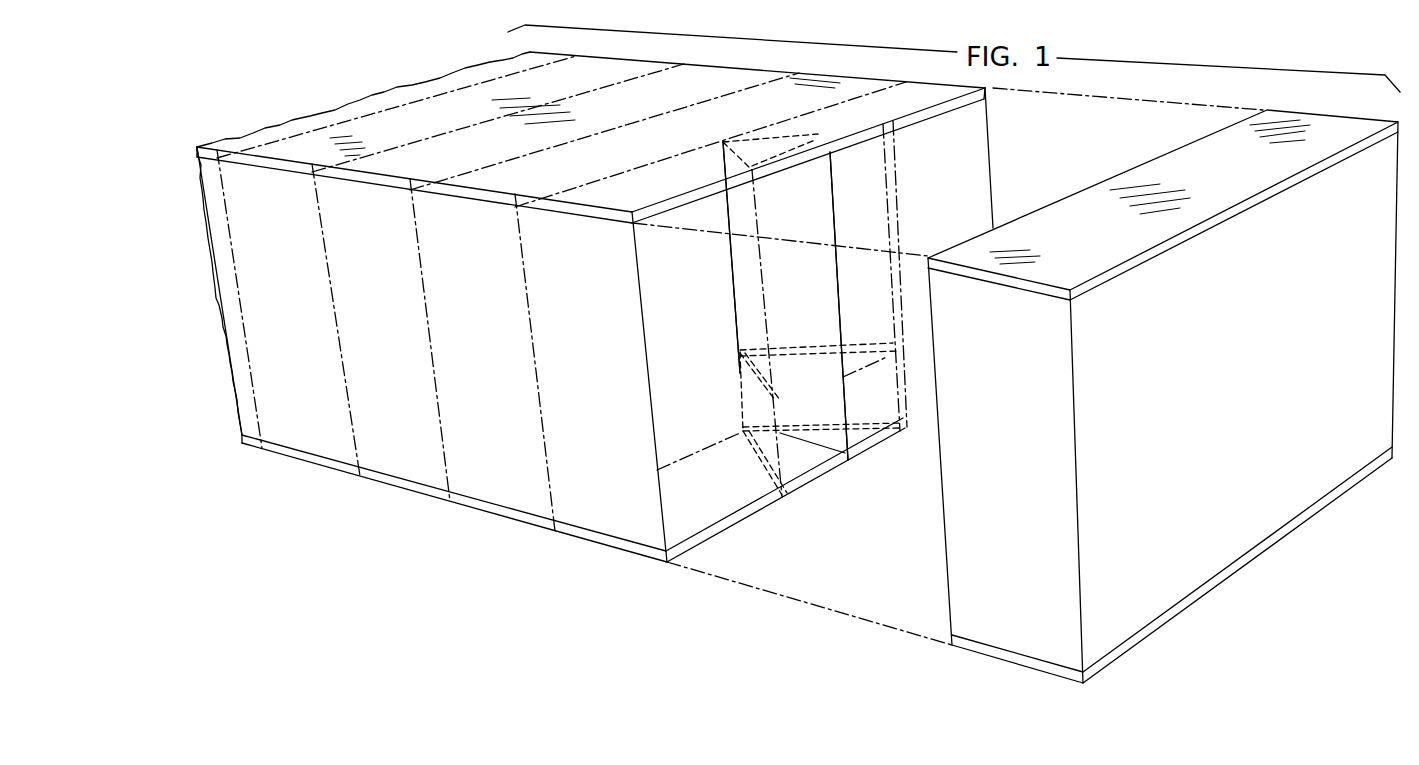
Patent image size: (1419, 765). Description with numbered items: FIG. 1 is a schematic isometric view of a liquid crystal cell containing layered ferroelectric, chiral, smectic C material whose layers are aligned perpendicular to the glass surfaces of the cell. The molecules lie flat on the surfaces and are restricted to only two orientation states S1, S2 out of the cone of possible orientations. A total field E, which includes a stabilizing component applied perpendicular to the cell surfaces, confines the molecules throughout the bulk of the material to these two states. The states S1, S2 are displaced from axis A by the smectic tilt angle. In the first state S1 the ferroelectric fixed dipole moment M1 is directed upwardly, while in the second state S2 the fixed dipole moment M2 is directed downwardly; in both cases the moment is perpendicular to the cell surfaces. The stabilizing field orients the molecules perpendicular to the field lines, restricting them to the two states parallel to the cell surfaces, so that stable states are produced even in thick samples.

The first state S1 is at (818, 137).
The second state S2 is at (722, 144).
The ferroelectric fixed dipole moment in first state M1 is at (805, 345).
The ferroelectric fixed dipole moment in second state M2 is at (757, 378).
The axis A is at (843, 376).
The total field E is at (200, 282).